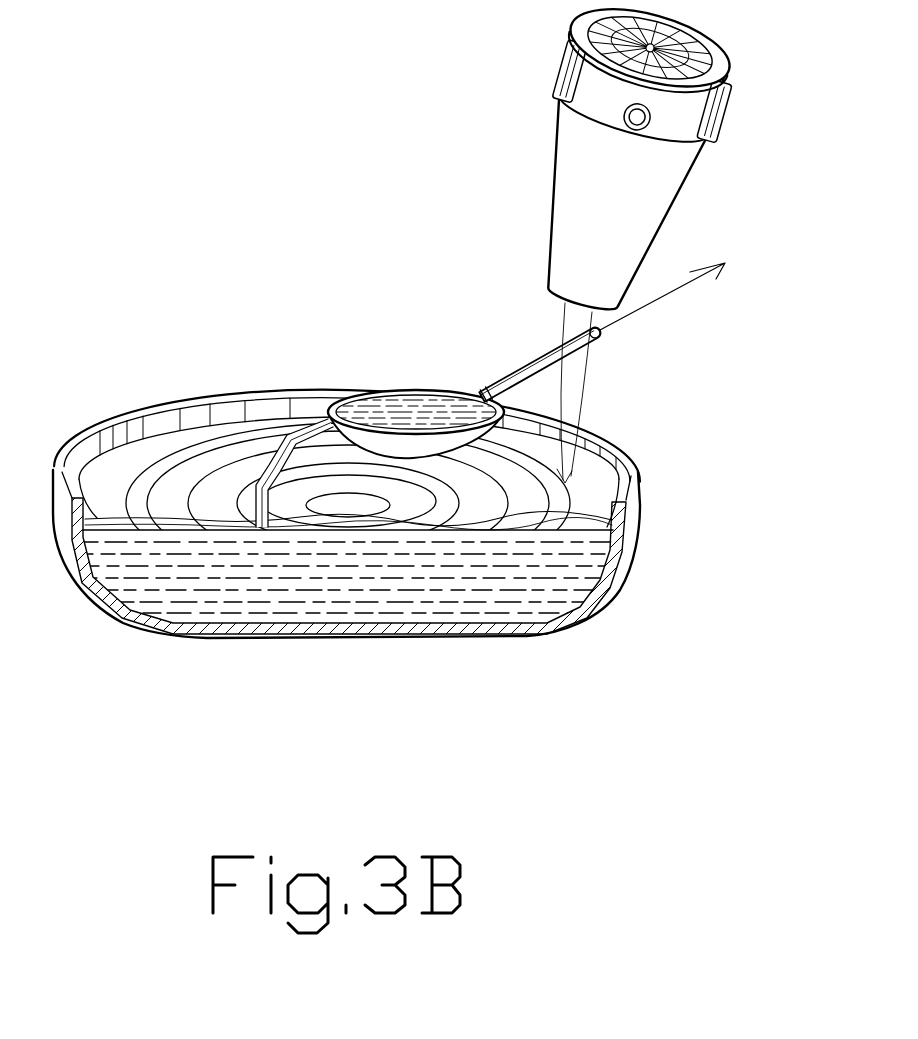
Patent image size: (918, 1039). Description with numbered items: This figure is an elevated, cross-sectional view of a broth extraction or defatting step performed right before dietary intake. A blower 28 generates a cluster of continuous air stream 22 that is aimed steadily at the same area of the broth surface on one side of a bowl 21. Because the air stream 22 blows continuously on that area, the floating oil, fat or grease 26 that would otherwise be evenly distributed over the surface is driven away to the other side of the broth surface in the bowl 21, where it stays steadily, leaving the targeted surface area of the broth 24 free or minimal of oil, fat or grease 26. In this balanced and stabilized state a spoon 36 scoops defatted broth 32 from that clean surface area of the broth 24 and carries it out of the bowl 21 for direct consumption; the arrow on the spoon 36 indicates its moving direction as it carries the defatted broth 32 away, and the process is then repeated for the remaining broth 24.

The bowl 21 is at (616, 558).
The air stream 22 is at (575, 392).
The broth 24 is at (213, 572).
The oil, fat or grease 26 is at (175, 483).
The blower 28 is at (592, 180).
The defatted broth 32 is at (405, 417).
The spoon 36 is at (498, 381).